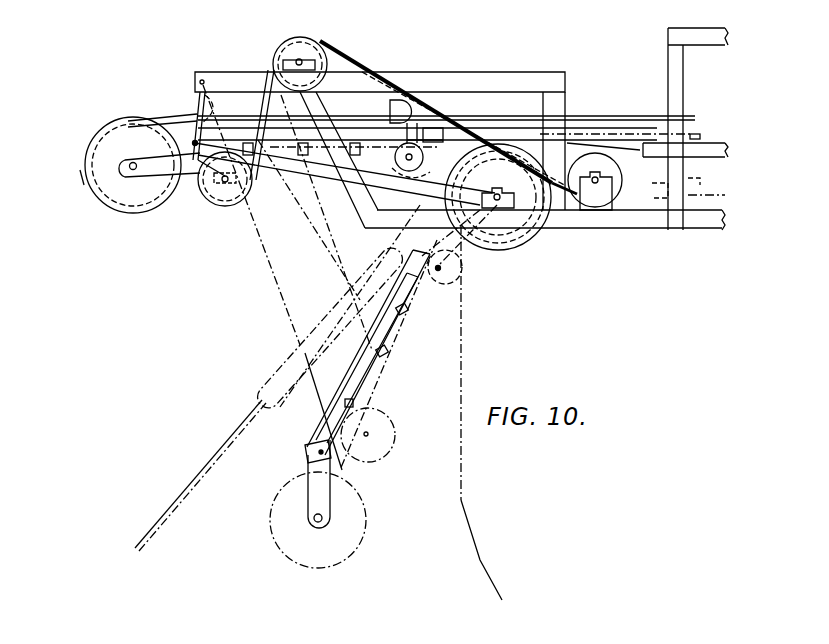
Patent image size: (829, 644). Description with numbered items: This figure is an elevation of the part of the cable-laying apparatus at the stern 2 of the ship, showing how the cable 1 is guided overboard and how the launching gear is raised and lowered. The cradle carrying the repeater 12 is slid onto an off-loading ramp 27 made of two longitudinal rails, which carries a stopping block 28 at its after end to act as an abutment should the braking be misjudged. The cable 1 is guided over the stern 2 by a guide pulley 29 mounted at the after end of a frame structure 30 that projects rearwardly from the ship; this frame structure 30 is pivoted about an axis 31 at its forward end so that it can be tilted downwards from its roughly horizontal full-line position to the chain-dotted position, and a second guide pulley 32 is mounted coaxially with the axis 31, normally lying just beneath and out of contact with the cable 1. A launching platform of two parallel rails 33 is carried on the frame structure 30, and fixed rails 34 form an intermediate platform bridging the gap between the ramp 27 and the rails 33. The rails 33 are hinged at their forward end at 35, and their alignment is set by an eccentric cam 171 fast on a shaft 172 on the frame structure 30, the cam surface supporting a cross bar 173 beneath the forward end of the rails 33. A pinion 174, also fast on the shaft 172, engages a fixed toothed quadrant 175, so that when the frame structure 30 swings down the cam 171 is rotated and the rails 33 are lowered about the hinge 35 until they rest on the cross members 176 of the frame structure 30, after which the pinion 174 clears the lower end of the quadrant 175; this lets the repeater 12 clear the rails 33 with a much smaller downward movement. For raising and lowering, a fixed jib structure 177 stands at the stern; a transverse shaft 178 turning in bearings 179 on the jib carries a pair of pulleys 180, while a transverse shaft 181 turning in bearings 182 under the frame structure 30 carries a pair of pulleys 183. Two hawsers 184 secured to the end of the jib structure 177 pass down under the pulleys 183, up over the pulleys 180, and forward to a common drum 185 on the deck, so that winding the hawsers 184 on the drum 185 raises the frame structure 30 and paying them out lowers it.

The cable 1 is at (638, 117).
The stern 2 is at (461, 505).
The repeater 12 is at (240, 108).
The off-loading ramp 27 is at (693, 153).
The stopping block 28 is at (695, 136).
The guide pulley 29 is at (113, 126).
The frame structure 30 is at (254, 184).
The axis 31 is at (497, 193).
The second guide pulley 32 is at (522, 235).
The rails 33 is at (345, 132).
The rails 34 is at (590, 128).
The hinge 35 is at (195, 137).
The eccentric cam 171 is at (423, 160).
The shaft 172 is at (400, 155).
The cross bar 173 is at (390, 118).
The pinion 174 is at (378, 182).
The toothed quadrant 175 is at (396, 232).
The cross members 176 is at (258, 166).
The jib structure 177 is at (474, 82).
The transverse shaft 178 is at (300, 58).
The bearings 179 is at (290, 62).
The pulleys 180 is at (448, 116).
The transverse shaft 181 is at (223, 186).
The bearings 182 is at (232, 186).
The pulleys 183 is at (208, 192).
The hawsers 184 is at (450, 125).
The drum 185 is at (614, 190).